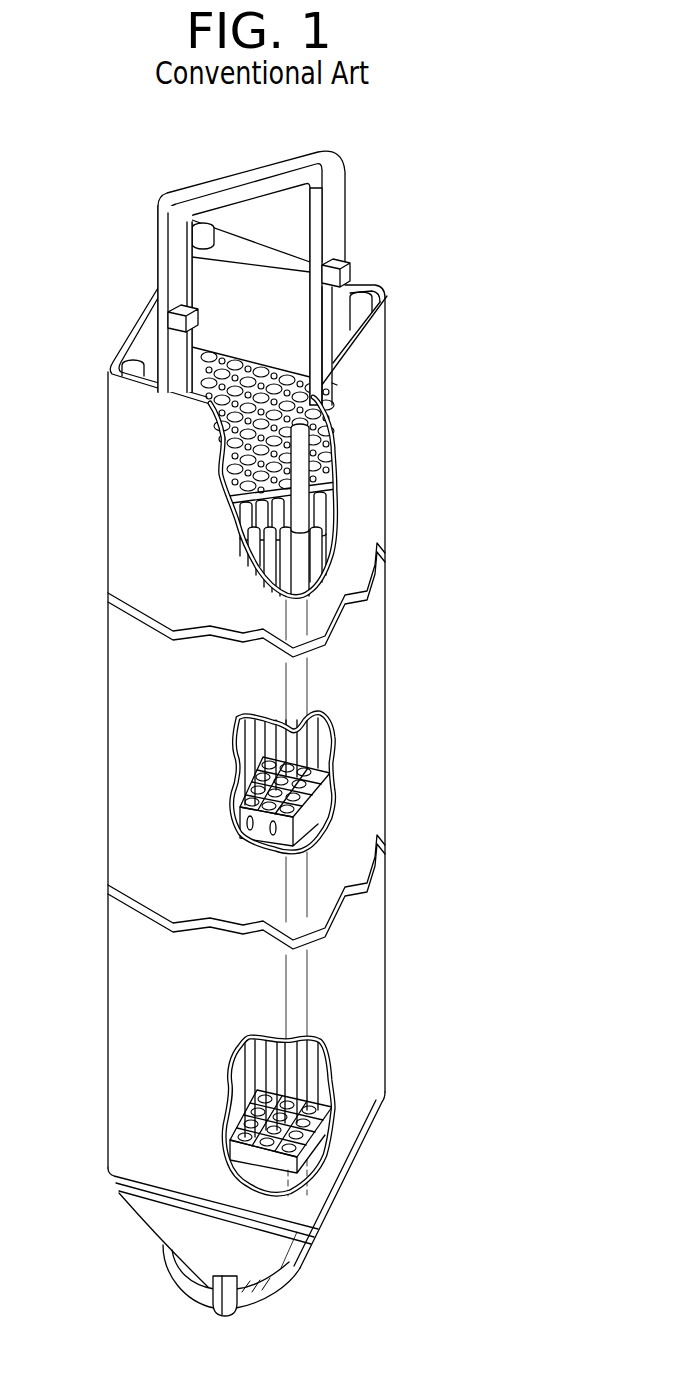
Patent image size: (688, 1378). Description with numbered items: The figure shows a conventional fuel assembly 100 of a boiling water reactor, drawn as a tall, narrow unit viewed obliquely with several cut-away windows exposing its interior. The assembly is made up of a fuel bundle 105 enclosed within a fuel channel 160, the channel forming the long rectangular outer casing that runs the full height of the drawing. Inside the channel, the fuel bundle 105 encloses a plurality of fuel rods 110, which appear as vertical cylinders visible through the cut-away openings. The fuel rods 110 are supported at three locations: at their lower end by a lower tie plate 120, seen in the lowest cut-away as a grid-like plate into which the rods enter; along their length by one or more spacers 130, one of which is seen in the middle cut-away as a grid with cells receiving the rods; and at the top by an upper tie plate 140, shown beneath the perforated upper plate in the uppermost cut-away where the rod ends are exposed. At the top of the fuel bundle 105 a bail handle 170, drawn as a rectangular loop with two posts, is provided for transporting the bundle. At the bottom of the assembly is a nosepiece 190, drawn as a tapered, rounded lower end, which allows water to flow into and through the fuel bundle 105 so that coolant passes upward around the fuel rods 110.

The fuel assembly 100 is at (271, 733).
The fuel bundle 105 is at (303, 492).
The fuel rods 110 is at (313, 575).
The lower tie plate 120 is at (300, 1173).
The spacers 130 is at (240, 822).
The upper tie plate 140 is at (237, 516).
The fuel channel 160 is at (385, 958).
The handle 170 is at (157, 257).
The nosepiece 190 is at (305, 1274).